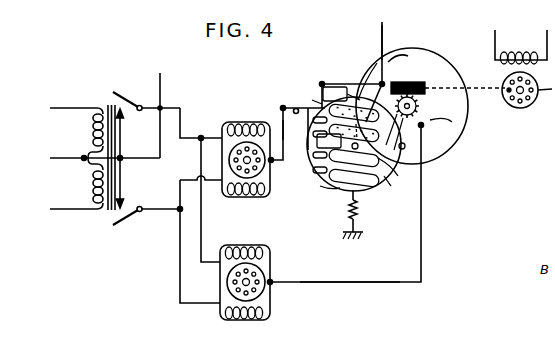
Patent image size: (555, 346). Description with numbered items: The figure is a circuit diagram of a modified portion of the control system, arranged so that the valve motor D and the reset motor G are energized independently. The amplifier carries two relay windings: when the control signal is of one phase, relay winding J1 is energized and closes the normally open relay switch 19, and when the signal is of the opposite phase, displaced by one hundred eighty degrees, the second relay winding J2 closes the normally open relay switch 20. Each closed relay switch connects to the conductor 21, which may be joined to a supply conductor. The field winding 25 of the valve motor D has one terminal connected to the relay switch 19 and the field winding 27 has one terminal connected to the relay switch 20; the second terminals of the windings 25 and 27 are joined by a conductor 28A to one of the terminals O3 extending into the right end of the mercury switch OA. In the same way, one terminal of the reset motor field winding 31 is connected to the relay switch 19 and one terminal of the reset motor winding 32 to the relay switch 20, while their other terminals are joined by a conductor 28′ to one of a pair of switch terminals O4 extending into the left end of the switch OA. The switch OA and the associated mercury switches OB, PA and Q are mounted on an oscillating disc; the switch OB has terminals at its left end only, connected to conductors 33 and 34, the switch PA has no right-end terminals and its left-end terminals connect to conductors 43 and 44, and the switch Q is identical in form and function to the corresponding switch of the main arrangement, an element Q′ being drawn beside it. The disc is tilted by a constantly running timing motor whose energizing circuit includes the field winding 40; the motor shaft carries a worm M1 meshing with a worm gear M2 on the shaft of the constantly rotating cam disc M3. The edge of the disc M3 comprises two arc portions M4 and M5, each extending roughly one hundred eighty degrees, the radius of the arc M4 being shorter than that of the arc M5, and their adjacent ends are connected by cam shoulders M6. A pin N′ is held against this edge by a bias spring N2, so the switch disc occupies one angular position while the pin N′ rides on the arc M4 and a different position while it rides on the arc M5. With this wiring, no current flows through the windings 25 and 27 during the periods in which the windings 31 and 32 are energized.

The relay switch 19 is at (121, 92).
The relay switch 20 is at (121, 223).
The conductor 21 is at (160, 80).
The field winding of valve motor 25 is at (244, 247).
The field winding of valve motor 27 is at (268, 316).
The conductor 28′ is at (267, 116).
The conductor 28A is at (346, 282).
The reset motor field winding 31 is at (243, 122).
The reset motor winding 32 is at (251, 197).
The conductor 33 is at (312, 121).
The conductor 34 is at (312, 135).
The field winding of timing motor 40 is at (520, 56).
The conductor 43 is at (312, 155).
The conductor 44 is at (312, 170).
The relay winding J1 is at (92, 132).
The second relay winding J2 is at (92, 188).
The reset motor G is at (224, 160).
The valve motor D is at (221, 282).
The switch terminals O4 is at (312, 100).
The switch terminals O3 is at (409, 138).
The mercury switch OA is at (341, 94).
The mercury switch OB is at (329, 141).
The mercury switch Q is at (339, 189).
The brush Q′ is at (312, 196).
The mercury switch PA is at (390, 170).
The pin N′ is at (349, 101).
The bias spring N2 is at (359, 208).
The worm M1 is at (418, 83).
The worm gear M2 is at (421, 105).
The cam disc M3 is at (452, 122).
The arc portion M4 is at (377, 63).
The arc portion M5 is at (446, 58).
The cam shoulders M6 is at (403, 54).